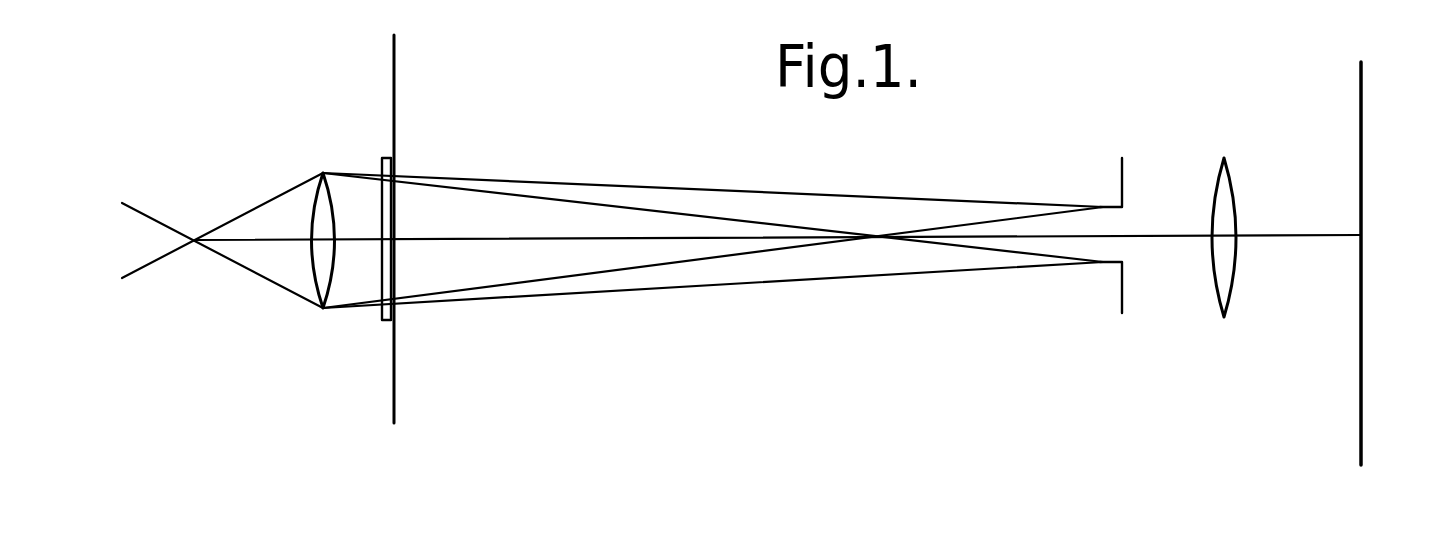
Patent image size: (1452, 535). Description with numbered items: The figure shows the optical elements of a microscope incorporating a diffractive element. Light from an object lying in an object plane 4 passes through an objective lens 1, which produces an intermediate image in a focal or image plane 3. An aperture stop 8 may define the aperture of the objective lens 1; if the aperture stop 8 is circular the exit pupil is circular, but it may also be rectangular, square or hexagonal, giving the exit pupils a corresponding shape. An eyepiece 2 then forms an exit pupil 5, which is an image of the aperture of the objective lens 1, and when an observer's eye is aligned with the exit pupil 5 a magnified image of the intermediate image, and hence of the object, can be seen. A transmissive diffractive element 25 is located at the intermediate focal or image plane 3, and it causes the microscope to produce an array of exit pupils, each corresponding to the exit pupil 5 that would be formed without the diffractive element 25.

The objective lens 1 is at (1224, 158).
The eyepiece 2 is at (322, 173).
The focal or image plane 3 is at (394, 95).
The object plane 4 is at (1361, 447).
The exit pupil 5 is at (195, 239).
The aperture stop 8 is at (1122, 158).
The transmissive diffractive element 25 is at (384, 320).